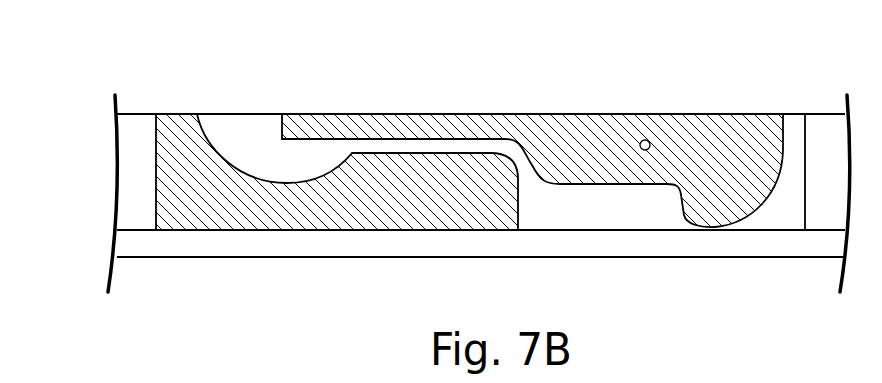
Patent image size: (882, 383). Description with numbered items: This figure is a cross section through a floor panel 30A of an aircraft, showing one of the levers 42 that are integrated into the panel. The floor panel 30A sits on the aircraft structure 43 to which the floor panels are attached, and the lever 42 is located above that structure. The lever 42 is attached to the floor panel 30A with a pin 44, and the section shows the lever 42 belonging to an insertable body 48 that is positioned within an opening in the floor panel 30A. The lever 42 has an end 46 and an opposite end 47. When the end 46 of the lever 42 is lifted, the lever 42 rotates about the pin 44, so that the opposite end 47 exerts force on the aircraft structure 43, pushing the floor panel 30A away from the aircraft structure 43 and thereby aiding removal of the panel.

The floor panel 30A is at (140, 170).
The lever 42 is at (446, 128).
The aircraft structure 43 is at (125, 244).
The pin 44 is at (650, 141).
The end of lever 46 is at (318, 127).
The opposite end of lever 47 is at (725, 198).
The insertable body 48 is at (164, 106).